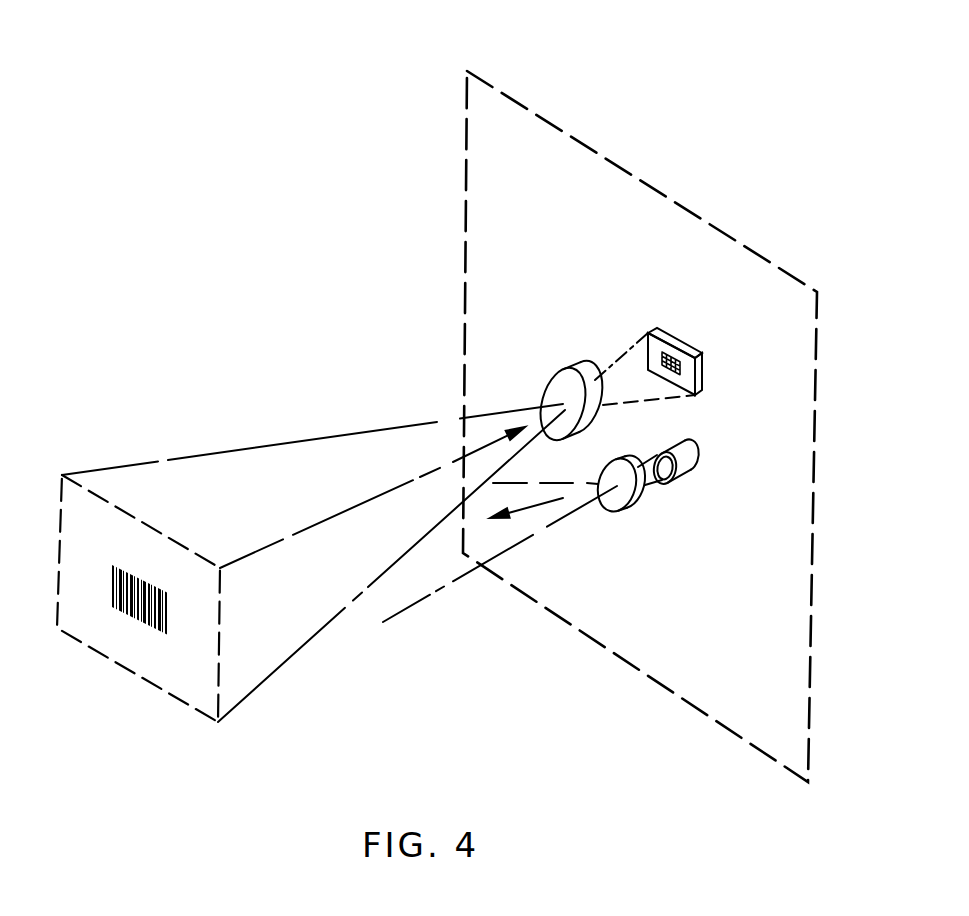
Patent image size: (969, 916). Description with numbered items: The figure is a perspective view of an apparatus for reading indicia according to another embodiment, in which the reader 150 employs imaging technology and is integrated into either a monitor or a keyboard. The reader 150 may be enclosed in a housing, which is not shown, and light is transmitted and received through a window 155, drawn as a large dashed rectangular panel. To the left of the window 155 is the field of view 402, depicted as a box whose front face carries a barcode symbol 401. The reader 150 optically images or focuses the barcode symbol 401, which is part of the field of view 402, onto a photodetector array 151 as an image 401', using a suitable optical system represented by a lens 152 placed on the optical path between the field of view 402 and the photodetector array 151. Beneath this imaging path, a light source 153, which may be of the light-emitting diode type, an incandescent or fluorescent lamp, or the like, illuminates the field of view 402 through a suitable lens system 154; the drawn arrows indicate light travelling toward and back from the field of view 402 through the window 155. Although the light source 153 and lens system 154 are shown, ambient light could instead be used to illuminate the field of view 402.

The reader 150 is at (655, 404).
The photodetector array 151 is at (690, 315).
The lens 152 is at (555, 378).
The light source 153 is at (692, 476).
The lens system 154 is at (622, 502).
The window 155 is at (550, 113).
The barcode symbol 401 is at (130, 670).
The image of barcode symbol 401' is at (652, 305).
The field of view 402 is at (93, 653).